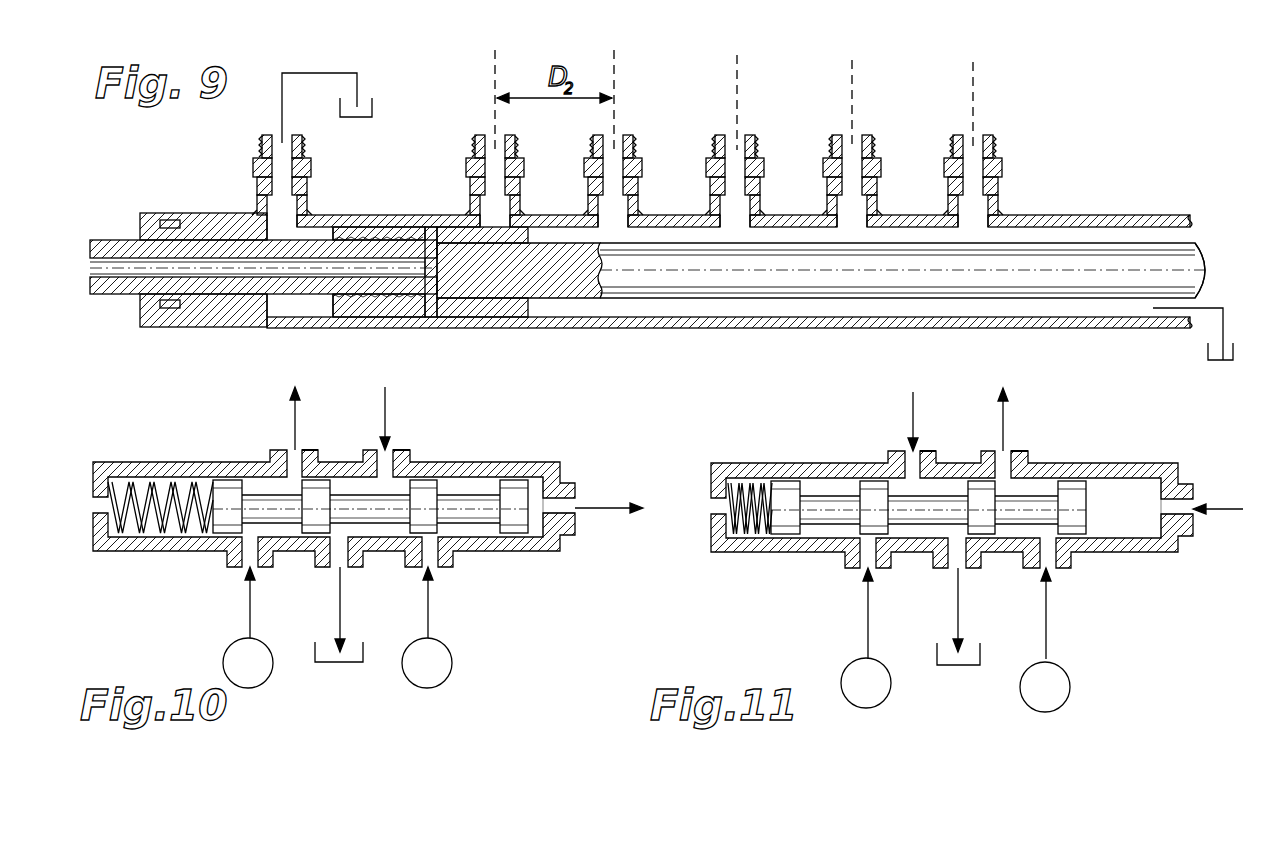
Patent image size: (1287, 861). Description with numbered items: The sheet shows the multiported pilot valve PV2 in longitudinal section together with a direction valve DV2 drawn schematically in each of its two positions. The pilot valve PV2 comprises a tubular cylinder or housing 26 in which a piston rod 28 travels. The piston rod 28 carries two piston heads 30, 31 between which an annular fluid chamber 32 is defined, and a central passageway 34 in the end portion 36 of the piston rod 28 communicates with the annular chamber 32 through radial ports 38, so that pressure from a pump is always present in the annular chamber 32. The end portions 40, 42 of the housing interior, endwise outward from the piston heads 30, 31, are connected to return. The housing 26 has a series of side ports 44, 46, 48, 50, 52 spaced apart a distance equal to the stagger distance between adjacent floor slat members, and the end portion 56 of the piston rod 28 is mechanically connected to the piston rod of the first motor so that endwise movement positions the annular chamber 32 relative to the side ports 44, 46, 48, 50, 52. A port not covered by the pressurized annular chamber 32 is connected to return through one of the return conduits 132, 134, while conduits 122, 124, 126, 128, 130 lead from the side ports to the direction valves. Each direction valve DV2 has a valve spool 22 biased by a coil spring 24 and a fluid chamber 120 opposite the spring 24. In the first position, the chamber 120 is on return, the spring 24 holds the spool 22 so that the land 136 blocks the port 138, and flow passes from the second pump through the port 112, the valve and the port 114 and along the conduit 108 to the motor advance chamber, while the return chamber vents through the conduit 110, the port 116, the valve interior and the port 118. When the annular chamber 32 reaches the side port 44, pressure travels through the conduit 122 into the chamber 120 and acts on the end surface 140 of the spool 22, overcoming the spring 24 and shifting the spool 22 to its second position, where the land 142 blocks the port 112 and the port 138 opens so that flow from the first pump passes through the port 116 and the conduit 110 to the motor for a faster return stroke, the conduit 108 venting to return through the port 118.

In FIG. 10, the valve spool 22 is at (480, 508).
In FIG. 11, the valve spool 22 is at (836, 505).
In FIG. 10, the coil spring 24 is at (170, 520).
In FIG. 11, the coil spring 24 is at (757, 538).
In FIG. 9, the tubular cylinder or housing 26 is at (1052, 323).
In FIG. 9, the piston rod 28 is at (1085, 268).
In FIG. 9, the piston head 30 is at (368, 300).
In FIG. 9, the piston head 31 is at (503, 318).
In FIG. 9, the annular fluid chamber 32 is at (405, 310).
In FIG. 9, the central passageway 34 is at (205, 268).
In FIG. 9, the end portion 36 is at (125, 290).
In FIG. 9, the radial ports 38 is at (446, 248).
In FIG. 9, the end portion of housing interior 40 is at (292, 318).
In FIG. 9, the end portion of housing interior 42 is at (972, 305).
In FIG. 9, the side port 44 is at (978, 165).
In FIG. 9, the side port 46 is at (855, 162).
In FIG. 9, the side port 48 is at (738, 155).
In FIG. 9, the side port 50 is at (615, 156).
In FIG. 9, the side port 52 is at (490, 150).
In FIG. 9, the end portion of piston member 56 is at (1188, 262).
In FIG. 10, the conduit 108 is at (287, 424).
In FIG. 11, the conduit 108 is at (912, 414).
In FIG. 10, the conduit 110 is at (386, 424).
In FIG. 11, the conduit 110 is at (1010, 424).
In FIG. 10, the port 112 is at (253, 568).
In FIG. 11, the port 112 is at (868, 578).
In FIG. 10, the port 114 is at (300, 452).
In FIG. 11, the port 114 is at (920, 450).
In FIG. 10, the port 116 is at (400, 452).
In FIG. 11, the port 116 is at (1020, 450).
In FIG. 10, the port 118 is at (342, 570).
In FIG. 11, the port 118 is at (957, 575).
In FIG. 10, the fluid chamber 120 is at (540, 527).
In FIG. 11, the fluid chamber 120 is at (1125, 527).
In FIG. 9, the conduit 122 is at (973, 70).
In FIG. 10, the conduit 122 is at (597, 502).
In FIG. 11, the conduit 122 is at (1110, 530).
In FIG. 9, the conduit 124 is at (852, 65).
In FIG. 9, the conduit 126 is at (737, 62).
In FIG. 9, the conduit 128 is at (614, 62).
In FIG. 9, the conduit 130 is at (495, 60).
In FIG. 9, the return conduit 132 is at (330, 73).
In FIG. 9, the return conduit 134 is at (1223, 325).
In FIG. 10, the land 136 is at (430, 512).
In FIG. 11, the land 136 is at (985, 530).
In FIG. 10, the port 138 is at (432, 572).
In FIG. 11, the port 138 is at (1050, 570).
In FIG. 10, the end surface 140 is at (540, 492).
In FIG. 11, the end surface 140 is at (1082, 505).
In FIG. 10, the land 142 is at (318, 525).
In FIG. 11, the land 142 is at (862, 508).
In FIG. 9, the pilot valve PV2 is at (805, 340).
In FIG. 10, the direction valve DV2 is at (480, 455).
In FIG. 11, the direction valve DV2 is at (795, 452).